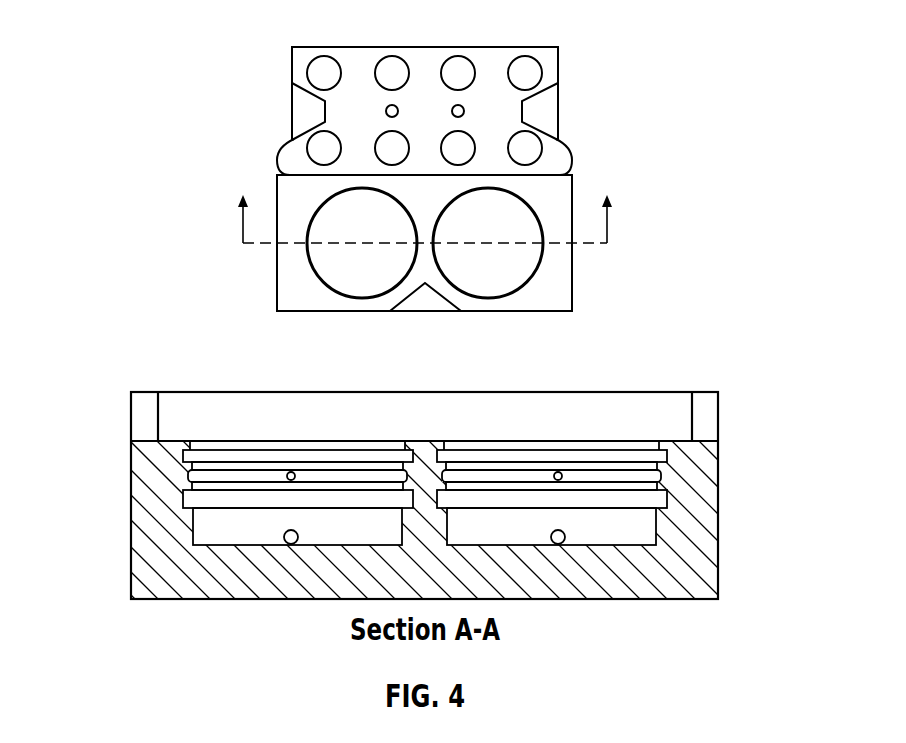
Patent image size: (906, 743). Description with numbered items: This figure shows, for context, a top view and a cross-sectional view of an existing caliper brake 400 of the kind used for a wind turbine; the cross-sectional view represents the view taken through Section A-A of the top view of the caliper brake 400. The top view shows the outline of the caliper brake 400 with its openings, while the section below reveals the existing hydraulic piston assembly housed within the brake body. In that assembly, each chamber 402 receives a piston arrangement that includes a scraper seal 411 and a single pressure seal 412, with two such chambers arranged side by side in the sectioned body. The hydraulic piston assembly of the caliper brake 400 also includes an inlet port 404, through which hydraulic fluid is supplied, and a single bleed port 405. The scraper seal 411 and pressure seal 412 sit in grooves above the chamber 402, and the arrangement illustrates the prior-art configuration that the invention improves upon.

The caliper brake 400 is at (118, 33).
The chamber 402 is at (637, 535).
The inlet port 404 is at (291, 544).
The bleed port 405 is at (291, 472).
The scraper seal 411 is at (668, 457).
The pressure seal 412 is at (668, 498).